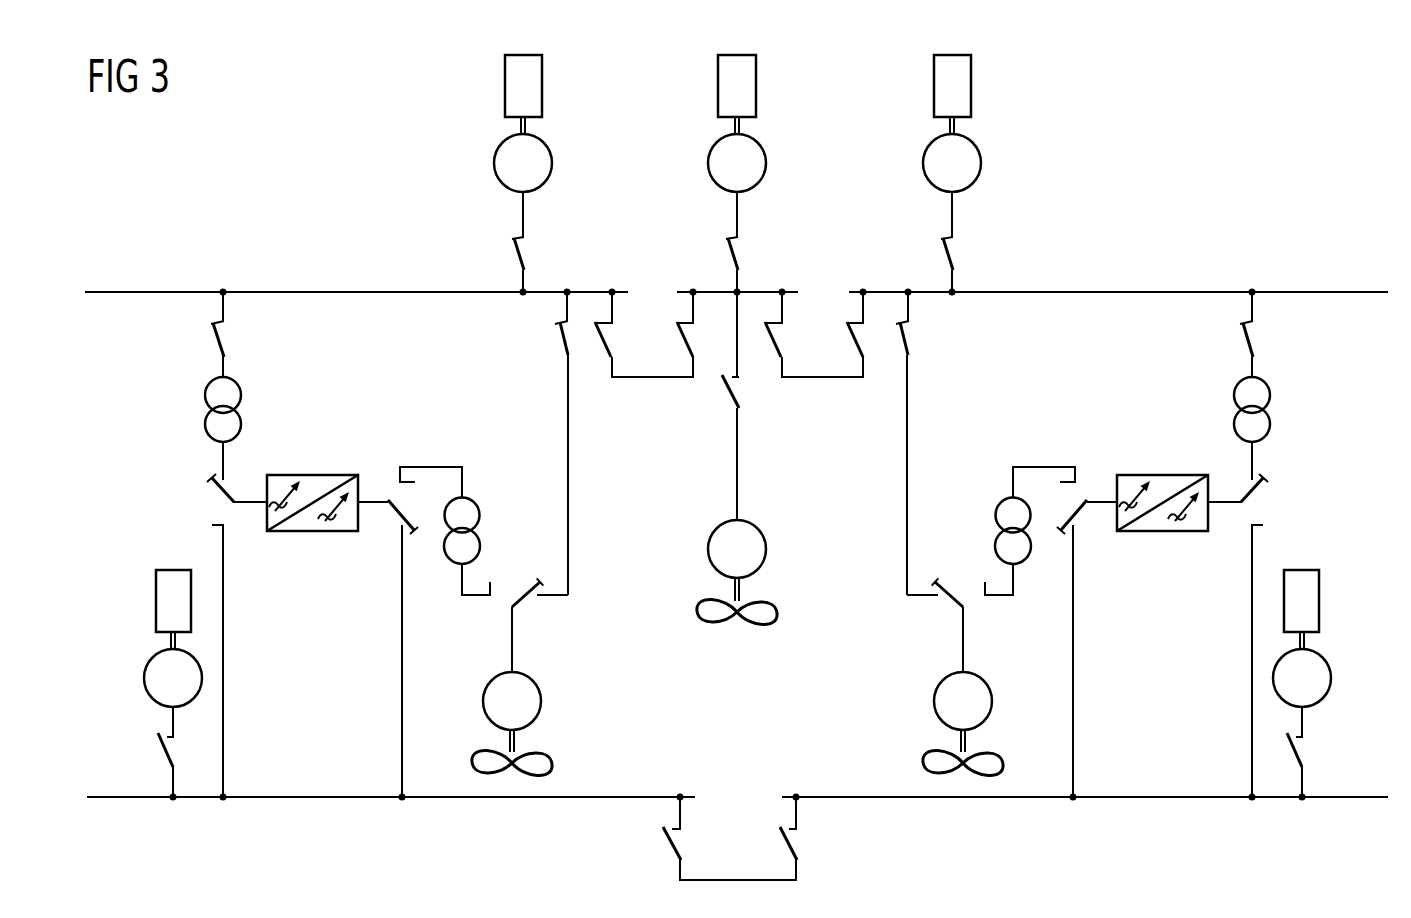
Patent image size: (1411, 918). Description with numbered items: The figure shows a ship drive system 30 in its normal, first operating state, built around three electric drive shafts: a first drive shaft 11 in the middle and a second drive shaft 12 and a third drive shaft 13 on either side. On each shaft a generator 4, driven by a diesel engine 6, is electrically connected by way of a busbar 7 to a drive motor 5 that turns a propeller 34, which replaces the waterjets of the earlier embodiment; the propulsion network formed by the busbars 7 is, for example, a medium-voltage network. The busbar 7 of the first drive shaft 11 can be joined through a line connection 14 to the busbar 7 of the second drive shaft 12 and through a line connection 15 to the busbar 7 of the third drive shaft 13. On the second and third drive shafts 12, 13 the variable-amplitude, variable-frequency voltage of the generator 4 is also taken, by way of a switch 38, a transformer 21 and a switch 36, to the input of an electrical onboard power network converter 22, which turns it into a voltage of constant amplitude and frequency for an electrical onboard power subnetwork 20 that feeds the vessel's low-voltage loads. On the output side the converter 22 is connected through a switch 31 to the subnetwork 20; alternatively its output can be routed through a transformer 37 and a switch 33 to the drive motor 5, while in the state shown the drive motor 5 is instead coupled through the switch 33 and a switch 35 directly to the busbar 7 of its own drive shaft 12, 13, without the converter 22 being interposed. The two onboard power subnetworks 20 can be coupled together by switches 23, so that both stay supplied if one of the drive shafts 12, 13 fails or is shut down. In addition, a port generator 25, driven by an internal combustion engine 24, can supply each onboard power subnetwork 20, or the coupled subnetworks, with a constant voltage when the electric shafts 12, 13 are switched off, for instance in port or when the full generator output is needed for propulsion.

The ship drive system 30 is at (342, 176).
The generator 4 is at (552, 163).
The drive motor 5 is at (541, 701).
The diesel engine 6 is at (541, 85).
The busbar 7 is at (590, 290).
The first drive shaft 11 is at (762, 446).
The second drive shaft 12 is at (620, 628).
The third drive shaft 13 is at (868, 628).
The line connection 14 is at (655, 378).
The line connection 15 is at (828, 378).
The electrical onboard power subnetwork 20 is at (318, 800).
The transformer 21 is at (205, 395).
The electrical onboard power network converter 22 is at (310, 532).
The switch 23 is at (668, 844).
The internal combustion engine 24 is at (155, 598).
The port generator 25 is at (144, 675).
The switch 31 is at (395, 513).
The switch 33 is at (526, 604).
The propeller 34 is at (553, 763).
The switch 35 is at (556, 338).
The switch 36 is at (232, 494).
The transformer 37 is at (481, 515).
The switch 38 is at (212, 334).